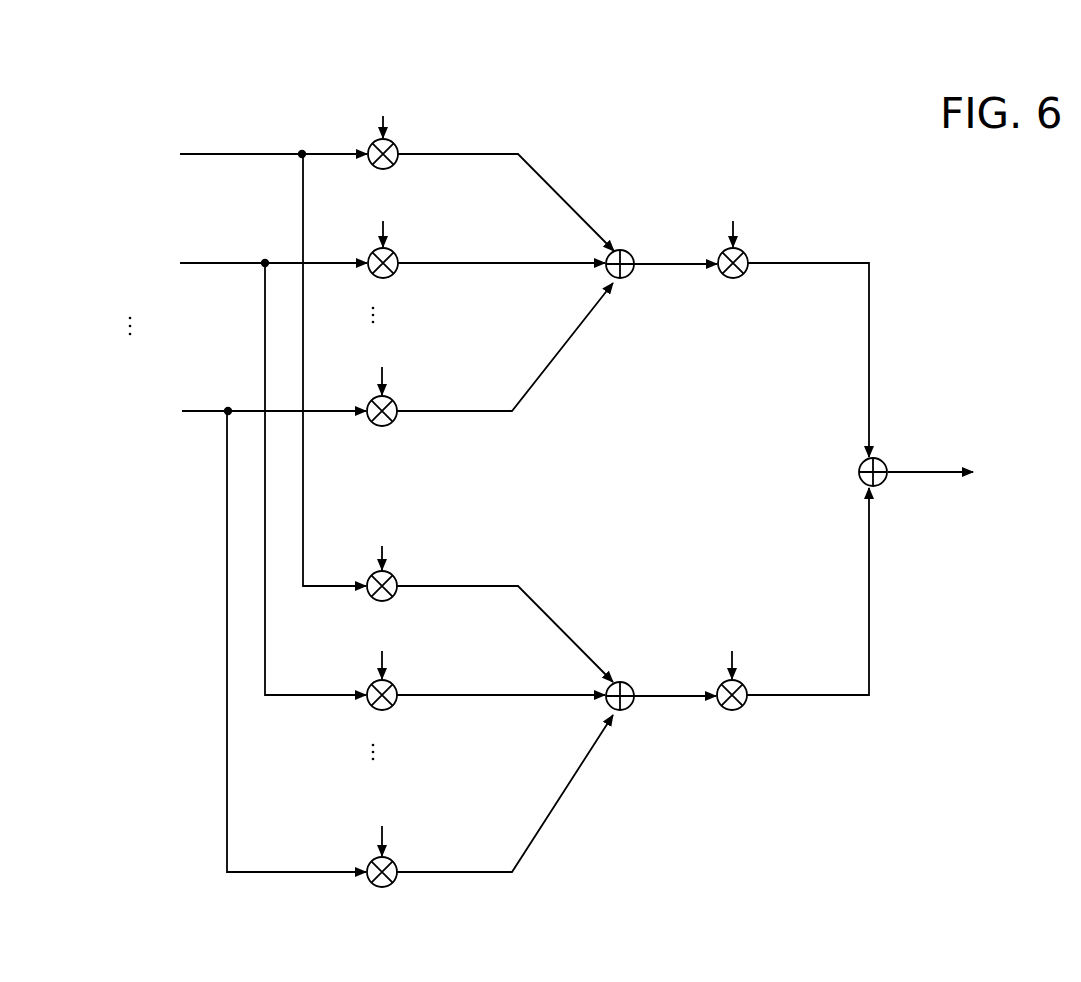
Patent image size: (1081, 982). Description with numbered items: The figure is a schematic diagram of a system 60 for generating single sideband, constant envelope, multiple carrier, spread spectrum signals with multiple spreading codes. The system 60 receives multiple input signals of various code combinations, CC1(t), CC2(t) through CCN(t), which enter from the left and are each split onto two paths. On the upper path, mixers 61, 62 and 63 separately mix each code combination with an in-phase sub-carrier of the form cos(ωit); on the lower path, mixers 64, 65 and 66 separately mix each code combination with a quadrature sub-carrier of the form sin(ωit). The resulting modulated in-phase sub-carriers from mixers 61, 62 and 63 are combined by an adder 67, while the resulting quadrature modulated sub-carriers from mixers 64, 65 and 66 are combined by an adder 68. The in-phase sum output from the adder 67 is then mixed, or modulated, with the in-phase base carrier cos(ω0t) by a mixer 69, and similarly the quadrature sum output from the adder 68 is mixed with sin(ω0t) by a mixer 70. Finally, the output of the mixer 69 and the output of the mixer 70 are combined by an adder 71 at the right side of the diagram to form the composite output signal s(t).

The system 60 is at (706, 50).
The mixer 61 is at (396, 162).
The mixer 62 is at (396, 272).
The mixer 63 is at (395, 420).
The mixer 64 is at (395, 594).
The mixer 65 is at (395, 703).
The mixer 66 is at (395, 880).
The adder 67 is at (627, 278).
The adder 68 is at (625, 710).
The mixer 69 is at (745, 273).
The mixer 70 is at (744, 706).
The adder 71 is at (882, 484).